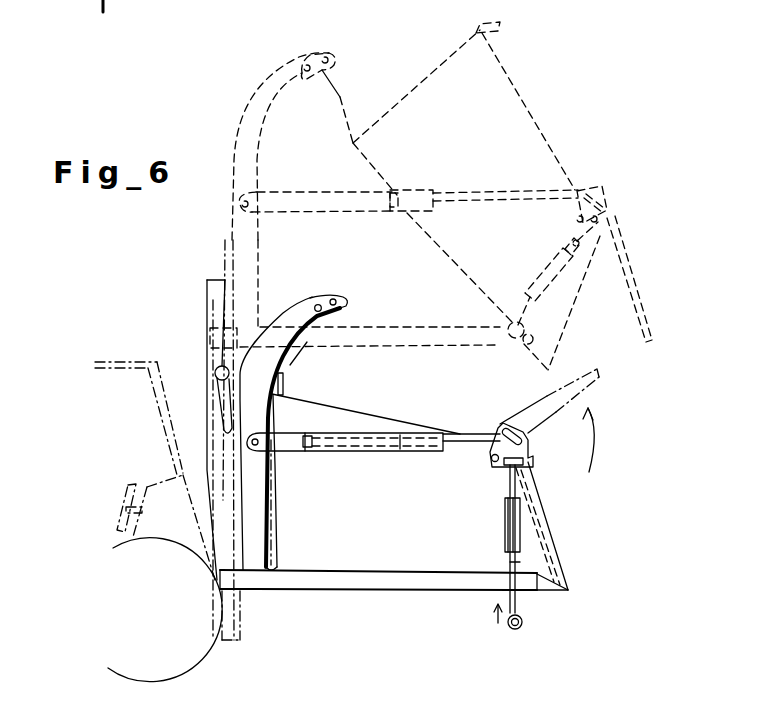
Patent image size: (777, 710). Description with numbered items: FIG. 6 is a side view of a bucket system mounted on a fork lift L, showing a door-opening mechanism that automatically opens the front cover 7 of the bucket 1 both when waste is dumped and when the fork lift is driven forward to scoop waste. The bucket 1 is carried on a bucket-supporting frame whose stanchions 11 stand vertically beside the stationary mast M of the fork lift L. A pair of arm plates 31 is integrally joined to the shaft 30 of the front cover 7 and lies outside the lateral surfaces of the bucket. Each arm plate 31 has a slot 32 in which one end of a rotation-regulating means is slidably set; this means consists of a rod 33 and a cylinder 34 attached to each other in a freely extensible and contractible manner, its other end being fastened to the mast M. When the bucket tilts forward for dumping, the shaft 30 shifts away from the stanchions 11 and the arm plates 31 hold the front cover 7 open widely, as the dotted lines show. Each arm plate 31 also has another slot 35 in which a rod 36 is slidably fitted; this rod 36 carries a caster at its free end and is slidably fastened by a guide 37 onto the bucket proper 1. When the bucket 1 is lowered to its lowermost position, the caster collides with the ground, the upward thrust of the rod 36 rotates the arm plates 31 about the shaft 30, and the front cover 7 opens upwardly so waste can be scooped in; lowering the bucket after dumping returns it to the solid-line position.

The bucket 1 is at (363, 545).
The front cover 7 is at (630, 278).
The stanchion 11 is at (262, 520).
The shaft 30 is at (492, 462).
The arm plate 31 is at (603, 188).
The slot 32 is at (524, 429).
The rod 33 is at (486, 192).
The cylinder 34 is at (355, 212).
The slot 35 is at (533, 462).
The rod 36 is at (573, 242).
The guide 37 is at (545, 272).
The fork lift L is at (121, 358).
The stationary mast M is at (212, 310).